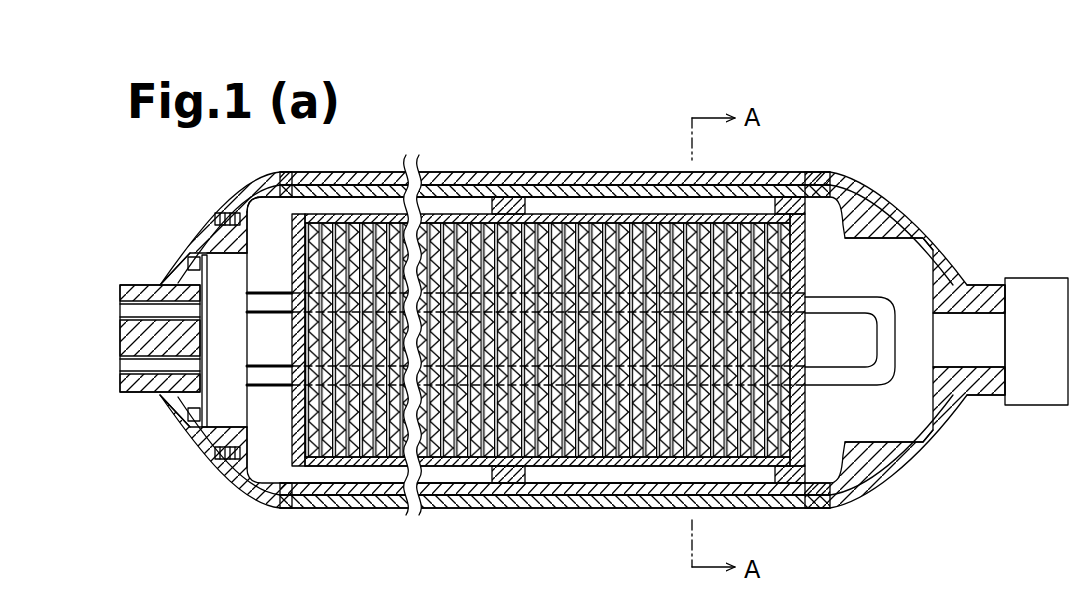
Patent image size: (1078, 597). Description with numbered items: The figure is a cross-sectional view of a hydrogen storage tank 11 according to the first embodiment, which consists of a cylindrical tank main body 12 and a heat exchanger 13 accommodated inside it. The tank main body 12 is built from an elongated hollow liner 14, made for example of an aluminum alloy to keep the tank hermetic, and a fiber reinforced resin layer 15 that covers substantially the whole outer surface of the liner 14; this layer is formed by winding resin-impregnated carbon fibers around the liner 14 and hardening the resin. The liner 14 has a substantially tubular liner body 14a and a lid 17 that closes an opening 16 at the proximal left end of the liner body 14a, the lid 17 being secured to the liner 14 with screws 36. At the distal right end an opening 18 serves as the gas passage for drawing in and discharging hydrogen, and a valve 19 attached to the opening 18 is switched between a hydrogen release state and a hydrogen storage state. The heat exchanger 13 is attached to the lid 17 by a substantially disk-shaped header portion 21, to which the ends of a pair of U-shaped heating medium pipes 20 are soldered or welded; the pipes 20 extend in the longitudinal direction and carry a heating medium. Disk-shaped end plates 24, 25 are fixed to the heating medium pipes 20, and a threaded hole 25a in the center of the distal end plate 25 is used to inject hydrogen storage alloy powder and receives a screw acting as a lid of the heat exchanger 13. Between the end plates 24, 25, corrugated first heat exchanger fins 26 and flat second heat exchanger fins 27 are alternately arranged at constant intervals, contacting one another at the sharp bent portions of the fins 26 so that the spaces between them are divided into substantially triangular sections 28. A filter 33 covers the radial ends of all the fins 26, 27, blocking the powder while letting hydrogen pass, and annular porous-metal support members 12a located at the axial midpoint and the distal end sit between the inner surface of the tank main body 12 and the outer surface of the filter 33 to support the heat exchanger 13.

The hydrogen storage tank 11 is at (804, 158).
The tank main body 12 is at (594, 171).
The support member 12a is at (503, 485).
The heat exchanger 13 is at (561, 477).
The liner 14 is at (504, 180).
The liner body 14a is at (461, 192).
The fiber reinforced resin layer 15 is at (522, 205).
The opening 16 is at (210, 440).
The lid 17 is at (192, 255).
The opening 18 is at (968, 322).
The valve 19 is at (1050, 290).
The heating medium pipe 20 is at (847, 378).
The header portion 21 is at (238, 395).
The end plate 24 is at (294, 263).
The end plate 25 is at (806, 254).
The threaded hole 25a is at (805, 326).
The first heat exchanger fin 26 is at (350, 458).
The second heat exchanger fin 27 is at (308, 440).
The section 28 is at (1062, 557).
The filter 33 is at (630, 462).
The screw 36 is at (218, 213).